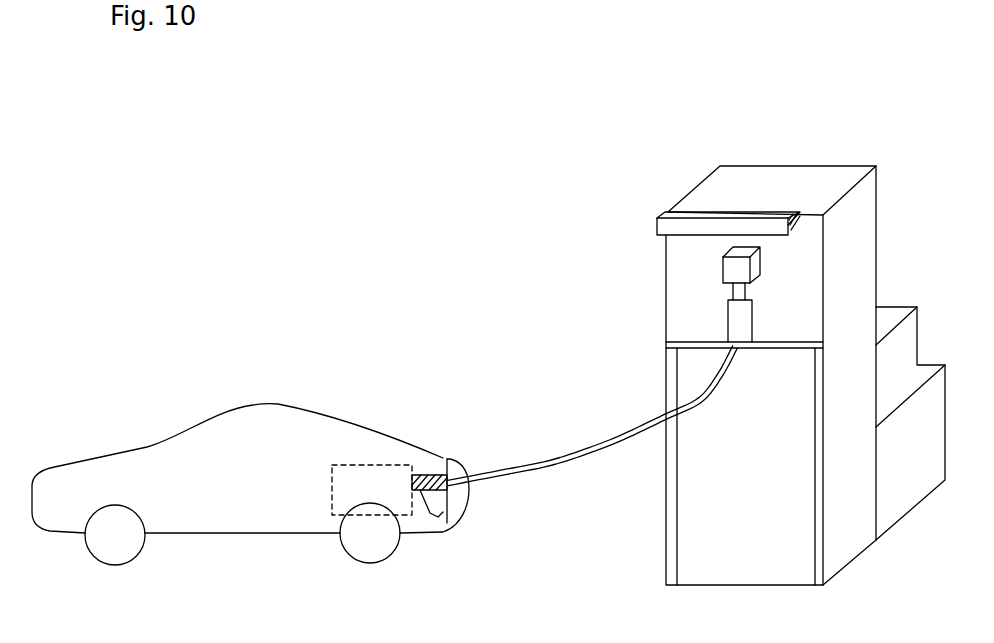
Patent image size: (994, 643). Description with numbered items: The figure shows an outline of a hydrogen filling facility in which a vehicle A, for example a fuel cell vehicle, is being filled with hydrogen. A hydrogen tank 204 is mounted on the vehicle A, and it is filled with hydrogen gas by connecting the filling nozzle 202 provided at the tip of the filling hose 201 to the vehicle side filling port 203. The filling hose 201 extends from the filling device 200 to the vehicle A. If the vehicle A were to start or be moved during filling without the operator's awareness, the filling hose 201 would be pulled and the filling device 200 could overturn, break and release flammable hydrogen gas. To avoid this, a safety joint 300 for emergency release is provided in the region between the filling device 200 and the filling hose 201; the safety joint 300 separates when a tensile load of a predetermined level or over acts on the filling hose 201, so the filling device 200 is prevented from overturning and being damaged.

The filling device 200 is at (852, 140).
The filling hose 201 is at (562, 465).
The filling nozzle 202 is at (452, 456).
The vehicle side filling port 203 is at (443, 514).
The hydrogen tank 204 is at (322, 512).
The safety joint 300 is at (723, 272).
The vehicle A is at (357, 396).